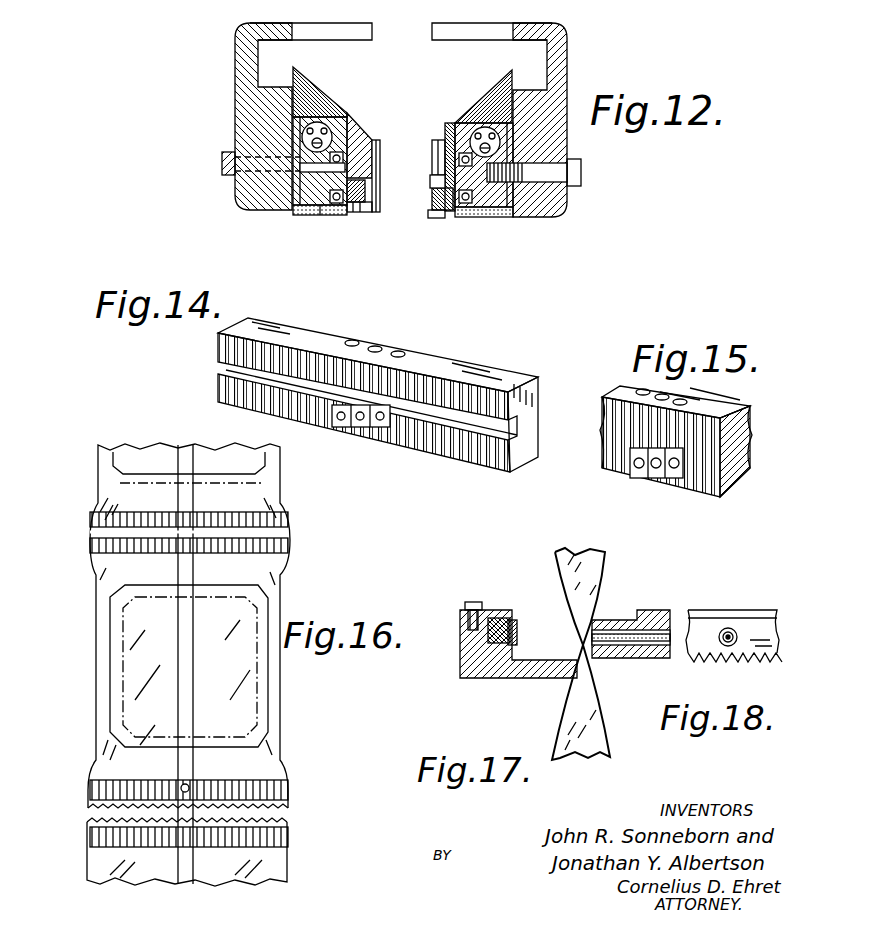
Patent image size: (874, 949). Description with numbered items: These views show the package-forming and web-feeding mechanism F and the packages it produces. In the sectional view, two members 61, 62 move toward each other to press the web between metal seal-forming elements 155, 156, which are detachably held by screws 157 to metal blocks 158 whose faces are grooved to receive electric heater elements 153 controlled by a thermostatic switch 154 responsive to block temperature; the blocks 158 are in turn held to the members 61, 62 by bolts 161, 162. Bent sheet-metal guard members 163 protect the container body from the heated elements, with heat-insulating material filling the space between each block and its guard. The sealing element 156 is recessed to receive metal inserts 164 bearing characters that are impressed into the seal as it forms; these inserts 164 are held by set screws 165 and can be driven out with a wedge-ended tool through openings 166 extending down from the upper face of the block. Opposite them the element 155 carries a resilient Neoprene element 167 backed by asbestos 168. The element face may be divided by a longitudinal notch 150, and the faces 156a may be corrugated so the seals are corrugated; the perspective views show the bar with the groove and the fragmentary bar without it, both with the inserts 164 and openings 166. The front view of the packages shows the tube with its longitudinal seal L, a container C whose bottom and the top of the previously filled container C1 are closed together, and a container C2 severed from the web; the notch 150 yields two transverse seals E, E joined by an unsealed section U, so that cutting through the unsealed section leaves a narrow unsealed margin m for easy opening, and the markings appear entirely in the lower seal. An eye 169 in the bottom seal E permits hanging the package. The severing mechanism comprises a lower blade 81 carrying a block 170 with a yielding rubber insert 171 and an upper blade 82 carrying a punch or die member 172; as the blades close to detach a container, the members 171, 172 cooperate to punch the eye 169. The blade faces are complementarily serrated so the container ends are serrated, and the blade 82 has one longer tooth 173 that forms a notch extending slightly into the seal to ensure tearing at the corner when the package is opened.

In FIG. 12, the member 61 is at (568, 92).
In FIG. 12, the member 62 is at (242, 95).
In FIG. 17, the lower blade 81 is at (516, 670).
In FIG. 17, the upper blade 82 is at (620, 658).
In FIG. 18, the upper blade 82 is at (709, 630).
In FIG. 12, the longitudinal notch 150 is at (377, 170).
In FIG. 14, the longitudinal notch 150 is at (228, 367).
In FIG. 12, the electric heater element 153 is at (341, 152).
In FIG. 12, the thermostatic switch 154 is at (321, 126).
In FIG. 12, the seal-forming element 155 is at (355, 141).
In FIG. 12, the seal-forming element 156 is at (445, 150).
In FIG. 14, the seal-forming element 156 is at (400, 409).
In FIG. 15, the seal-forming element 156 is at (735, 490).
In FIG. 14, the corrugated face 156a is at (473, 395).
In FIG. 12, the screw 157 is at (292, 200).
In FIG. 12, the metal block 158 is at (303, 217).
In FIG. 12, the bolt 161 is at (582, 172).
In FIG. 12, the bolt 162 is at (226, 168).
In FIG. 12, the guard member 163 is at (303, 75).
In FIG. 12, the insert 164 is at (352, 236).
In FIG. 14, the insert 164 is at (342, 428).
In FIG. 15, the insert 164 is at (650, 480).
In FIG. 12, the set screw 165 is at (441, 218).
In FIG. 12, the opening 166 is at (456, 126).
In FIG. 14, the opening 166 is at (398, 351).
In FIG. 15, the opening 166 is at (687, 401).
In FIG. 12, the element 167 is at (366, 205).
In FIG. 12, the backing 168 is at (333, 217).
In FIG. 16, the eye 169 is at (190, 785).
In FIG. 17, the block 170 is at (508, 620).
In FIG. 17, the insert 171 is at (518, 633).
In FIG. 17, the punch or die member 172 is at (598, 630).
In FIG. 18, the punch or die member 172 is at (739, 630).
In FIG. 18, the tooth 173 is at (753, 664).
In FIG. 12, the package-forming mechanism F is at (390, 262).
In FIG. 16, the longitudinal seal L is at (190, 462).
In FIG. 16, the container C is at (270, 466).
In FIG. 17, the filled container C1 is at (562, 566).
In FIG. 16, the filled container C2 is at (285, 866).
In FIG. 17, the filled container C2 is at (565, 730).
In FIG. 16, the transverse seal E is at (115, 516).
In FIG. 16, the unsealed transverse section U is at (95, 530).
In FIG. 16, the unsealed margin m is at (290, 805).